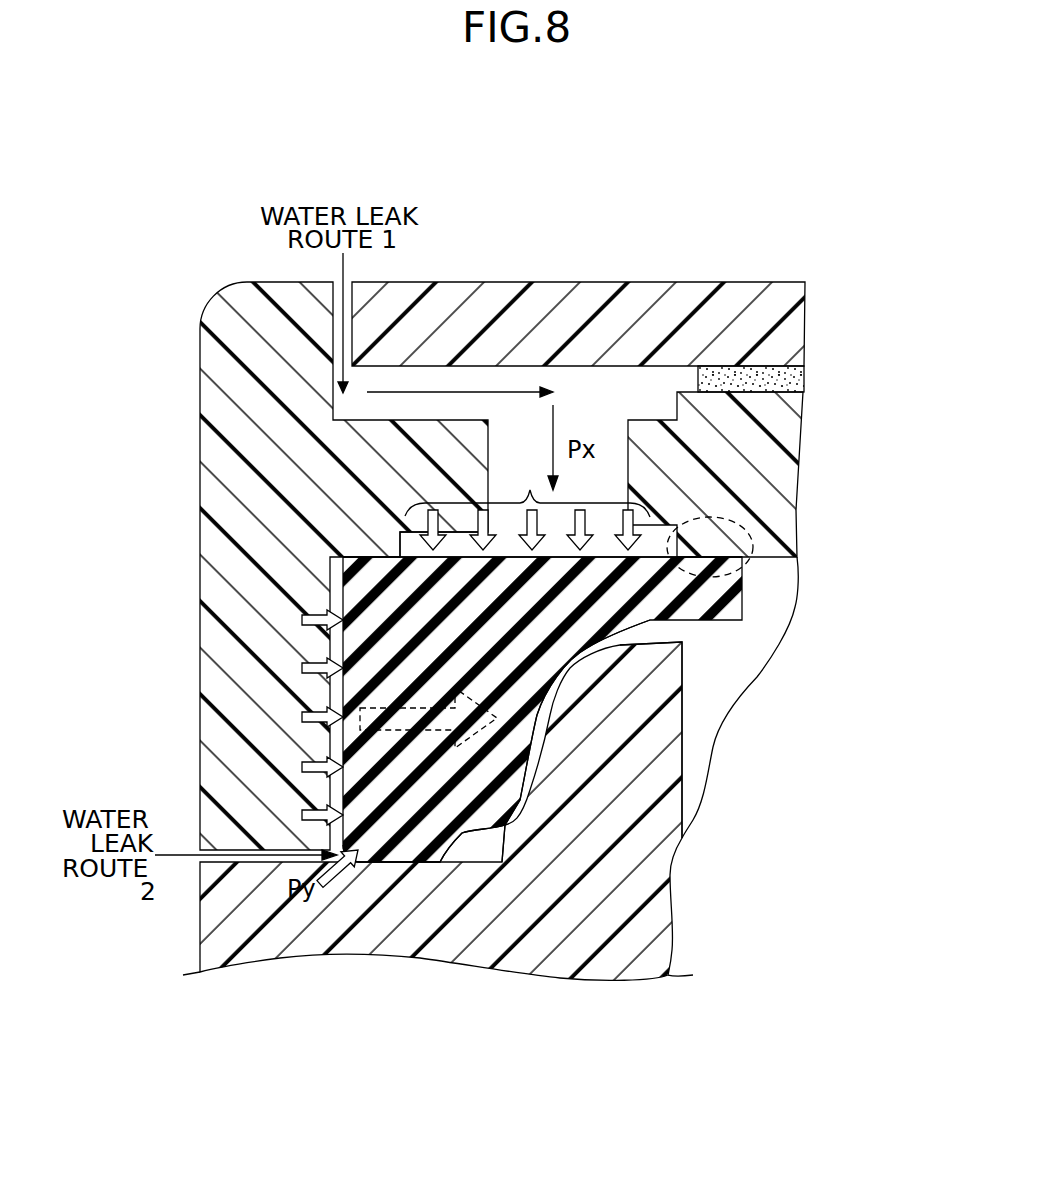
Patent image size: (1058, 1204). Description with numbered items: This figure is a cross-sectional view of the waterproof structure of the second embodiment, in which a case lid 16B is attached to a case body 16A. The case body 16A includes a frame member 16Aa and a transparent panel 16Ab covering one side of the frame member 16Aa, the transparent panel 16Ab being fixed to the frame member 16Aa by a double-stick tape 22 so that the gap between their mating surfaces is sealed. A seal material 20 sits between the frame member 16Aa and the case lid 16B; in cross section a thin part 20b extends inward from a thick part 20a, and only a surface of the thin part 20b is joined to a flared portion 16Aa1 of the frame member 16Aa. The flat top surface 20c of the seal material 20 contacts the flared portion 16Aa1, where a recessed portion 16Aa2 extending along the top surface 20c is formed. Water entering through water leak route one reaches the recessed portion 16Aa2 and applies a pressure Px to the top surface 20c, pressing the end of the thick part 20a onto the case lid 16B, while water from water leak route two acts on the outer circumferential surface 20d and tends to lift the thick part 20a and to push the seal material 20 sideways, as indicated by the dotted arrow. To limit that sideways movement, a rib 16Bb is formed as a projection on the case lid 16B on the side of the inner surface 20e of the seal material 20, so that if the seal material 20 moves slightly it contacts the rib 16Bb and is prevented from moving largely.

The case body 16A is at (521, 497).
The frame member 16Aa is at (262, 604).
The flared portion 16Aa1 is at (773, 478).
The recessed portion 16Aa2 is at (752, 524).
The transparent panel 16Ab is at (540, 313).
The double-stick tape 22 is at (803, 378).
The seal material 20 is at (514, 690).
The thick part 20a is at (400, 848).
The thin part 20b is at (720, 588).
The top surface 20c is at (400, 534).
The outer circumferential surface 20d is at (343, 707).
The inner surface 20e is at (518, 657).
The case lid 16B is at (557, 849).
The rib 16Bb is at (605, 775).